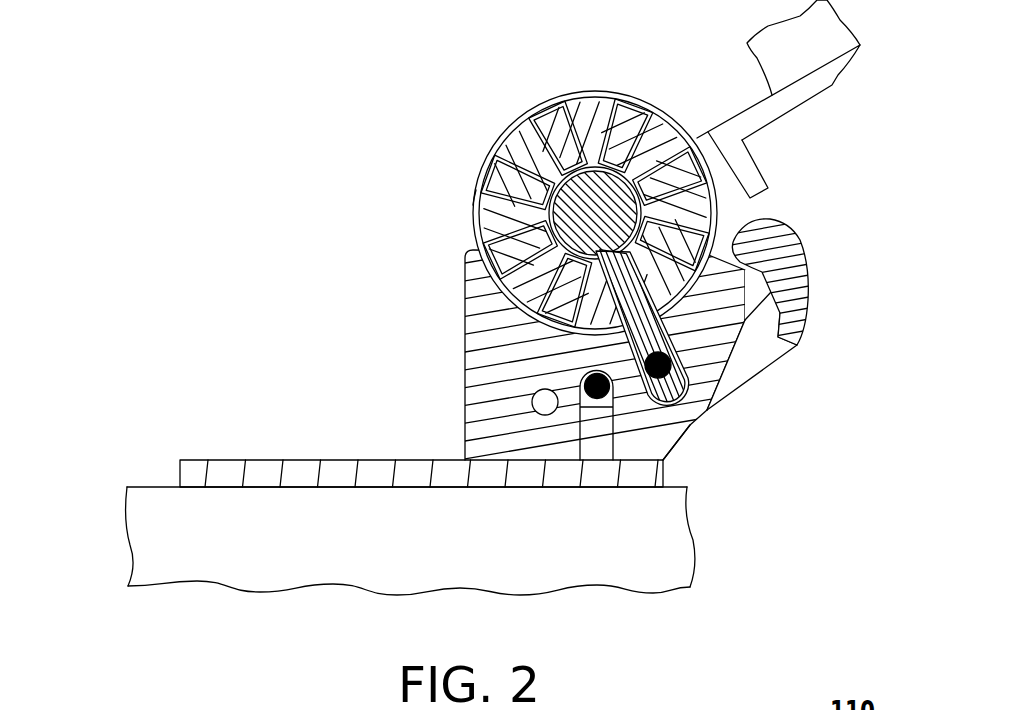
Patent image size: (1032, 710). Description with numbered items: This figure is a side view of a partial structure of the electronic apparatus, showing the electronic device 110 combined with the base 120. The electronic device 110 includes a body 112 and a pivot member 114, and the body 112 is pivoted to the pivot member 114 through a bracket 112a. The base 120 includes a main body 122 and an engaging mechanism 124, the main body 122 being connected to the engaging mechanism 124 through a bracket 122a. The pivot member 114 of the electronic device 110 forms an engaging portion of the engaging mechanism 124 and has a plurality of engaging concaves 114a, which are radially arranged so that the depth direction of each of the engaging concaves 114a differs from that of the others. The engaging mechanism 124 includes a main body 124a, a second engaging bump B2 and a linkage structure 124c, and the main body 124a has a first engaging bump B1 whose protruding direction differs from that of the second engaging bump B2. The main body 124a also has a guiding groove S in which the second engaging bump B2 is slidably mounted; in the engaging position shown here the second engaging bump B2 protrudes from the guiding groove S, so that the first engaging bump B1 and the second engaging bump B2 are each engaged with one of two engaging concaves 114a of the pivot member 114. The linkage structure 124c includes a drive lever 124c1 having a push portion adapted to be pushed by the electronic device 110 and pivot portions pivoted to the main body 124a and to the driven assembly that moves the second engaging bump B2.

The electronic device 110 is at (786, 99).
The body 112 is at (840, 47).
The bracket 112a is at (790, 100).
The pivot member 114 is at (561, 188).
The engaging concaves 114a is at (508, 183).
The first engaging bump B1 is at (478, 197).
The base 120 is at (477, 419).
The main body 122 is at (150, 539).
The bracket 122a is at (232, 472).
The engaging mechanism 124 is at (608, 419).
The main body 124a is at (481, 396).
The linkage structure 124c is at (838, 269).
The drive lever 124c1 is at (767, 352).
The second engaging bump B2 is at (767, 355).
The guiding groove S is at (655, 433).